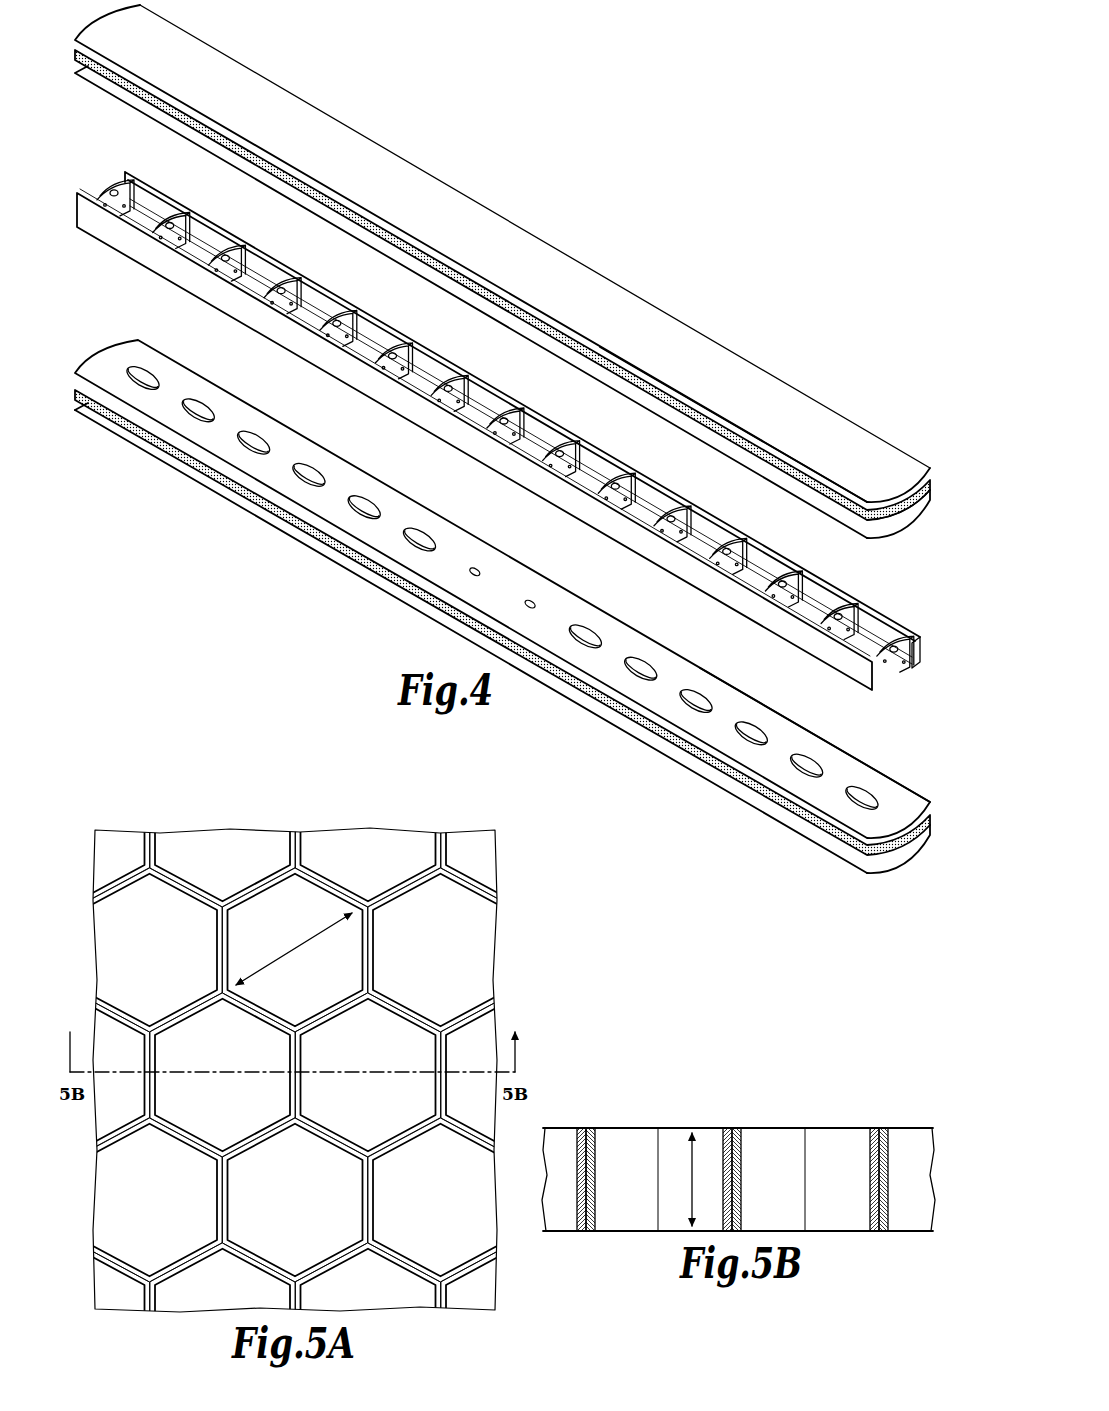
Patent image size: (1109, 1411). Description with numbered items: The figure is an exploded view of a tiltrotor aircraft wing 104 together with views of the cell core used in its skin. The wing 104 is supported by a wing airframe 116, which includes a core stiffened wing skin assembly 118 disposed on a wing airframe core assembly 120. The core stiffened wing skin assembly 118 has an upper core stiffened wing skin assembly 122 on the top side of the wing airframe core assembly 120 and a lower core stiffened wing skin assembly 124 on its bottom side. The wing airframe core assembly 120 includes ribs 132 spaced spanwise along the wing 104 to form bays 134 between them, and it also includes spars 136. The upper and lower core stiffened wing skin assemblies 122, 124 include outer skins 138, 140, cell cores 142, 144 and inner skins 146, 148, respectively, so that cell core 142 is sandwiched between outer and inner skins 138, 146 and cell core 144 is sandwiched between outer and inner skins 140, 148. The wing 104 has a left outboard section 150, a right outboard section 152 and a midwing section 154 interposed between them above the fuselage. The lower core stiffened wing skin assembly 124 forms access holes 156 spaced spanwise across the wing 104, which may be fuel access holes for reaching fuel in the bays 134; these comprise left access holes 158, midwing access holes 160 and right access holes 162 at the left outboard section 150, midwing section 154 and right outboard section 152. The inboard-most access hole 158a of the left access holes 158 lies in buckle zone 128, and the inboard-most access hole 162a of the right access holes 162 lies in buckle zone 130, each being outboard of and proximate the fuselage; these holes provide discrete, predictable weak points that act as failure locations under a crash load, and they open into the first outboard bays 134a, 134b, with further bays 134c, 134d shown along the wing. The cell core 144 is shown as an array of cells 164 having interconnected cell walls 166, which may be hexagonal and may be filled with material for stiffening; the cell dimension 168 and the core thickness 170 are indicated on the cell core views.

In FIG. 4, the wing 104 is at (510, 285).
In FIG. 4, the wing airframe 116 is at (510, 285).
In FIG. 4, the core stiffened wing skin assembly 118 is at (502, 318).
In FIG. 4, the wing airframe core assembly 120 is at (507, 404).
In FIG. 4, the upper core stiffened wing skin assembly 122 is at (510, 285).
In FIG. 4, the lower core stiffened wing skin assembly 124 is at (510, 660).
In FIG. 4, the buckle zone 128 is at (502, 622).
In FIG. 4, the buckle zone 130 is at (510, 629).
In FIG. 4, the ribs 132 is at (521, 431).
In FIG. 4, the bays 134 is at (691, 508).
In FIG. 4, the first outboard bay 134a is at (583, 442).
In FIG. 4, the first outboard bay 134b is at (414, 343).
In FIG. 4, the transverse rib 134c is at (527, 409).
In FIG. 4, the transverse rib 134d is at (471, 377).
In FIG. 4, the spars 136 is at (920, 621).
In FIG. 4, the outer skin 138 is at (898, 427).
In FIG. 4, the outer skin 140 is at (471, 664).
In FIG. 4, the cell core 142 is at (906, 457).
In FIG. 4, the cell core 144 is at (906, 800).
In FIG. 5A, the cell core 144 is at (296, 1075).
In FIG. 5B, the cell core 144 is at (738, 1138).
In FIG. 4, the inner skin 146 is at (898, 530).
In FIG. 4, the inner skin 148 is at (815, 735).
In FIG. 4, the left outboard section 150 is at (733, 407).
In FIG. 4, the right outboard section 152 is at (502, 251).
In FIG. 4, the midwing section 154 is at (535, 236).
In FIG. 4, the access holes 156 is at (502, 589).
In FIG. 4, the left access holes 158 is at (724, 688).
In FIG. 4, the inboard-most access hole 158a is at (594, 607).
In FIG. 4, the midwing access holes 160 is at (501, 557).
In FIG. 4, the right access holes 162 is at (289, 459).
In FIG. 4, the inboard-most access hole 162a is at (427, 512).
In FIG. 5A, the cells 164 is at (296, 1075).
In FIG. 5B, the cells 164 is at (712, 1155).
In FIG. 5A, the cell walls 166 is at (296, 1075).
In FIG. 5B, the cell walls 166 is at (732, 1147).
In FIG. 5A, the cell width 168 is at (294, 944).
In FIG. 5B, the core thickness 170 is at (647, 1179).